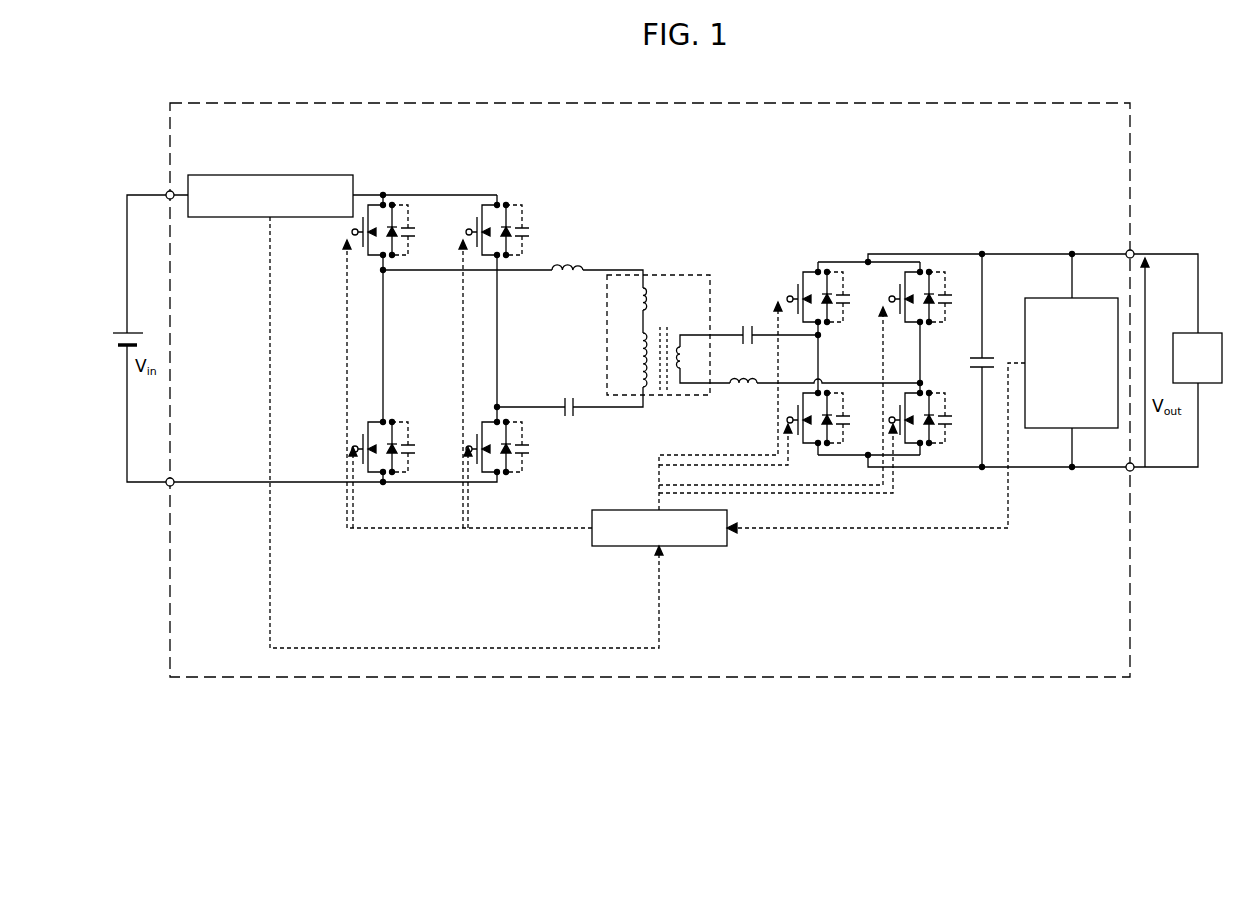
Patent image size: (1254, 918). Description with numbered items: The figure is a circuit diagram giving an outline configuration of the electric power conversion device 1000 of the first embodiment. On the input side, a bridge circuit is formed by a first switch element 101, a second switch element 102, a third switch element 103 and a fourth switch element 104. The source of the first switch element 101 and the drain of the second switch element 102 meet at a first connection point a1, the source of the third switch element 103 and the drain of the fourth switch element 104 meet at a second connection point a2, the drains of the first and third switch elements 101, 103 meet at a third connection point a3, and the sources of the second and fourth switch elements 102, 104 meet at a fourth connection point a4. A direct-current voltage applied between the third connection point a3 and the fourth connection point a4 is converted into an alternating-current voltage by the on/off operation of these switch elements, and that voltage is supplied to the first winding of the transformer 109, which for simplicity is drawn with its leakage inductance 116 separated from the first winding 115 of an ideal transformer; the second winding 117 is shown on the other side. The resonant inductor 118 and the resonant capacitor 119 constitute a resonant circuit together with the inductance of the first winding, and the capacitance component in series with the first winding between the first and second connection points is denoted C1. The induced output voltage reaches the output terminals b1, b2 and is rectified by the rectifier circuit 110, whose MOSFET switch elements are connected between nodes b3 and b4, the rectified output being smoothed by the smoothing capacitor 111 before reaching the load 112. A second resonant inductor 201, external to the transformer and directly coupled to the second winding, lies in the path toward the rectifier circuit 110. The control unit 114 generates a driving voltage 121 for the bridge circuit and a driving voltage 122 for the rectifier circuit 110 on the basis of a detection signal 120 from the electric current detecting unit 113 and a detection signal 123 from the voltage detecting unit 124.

The electric power conversion device 1000 is at (965, 103).
The electric current detecting unit 113 is at (278, 175).
The first switch element 101 is at (374, 192).
The second switch element 102 is at (366, 470).
The third switch element 103 is at (487, 202).
The fourth switch element 104 is at (481, 470).
The first connection point a1 is at (386, 273).
The second connection point a2 is at (500, 405).
The third connection point a3 is at (386, 193).
The fourth connection point a4 is at (386, 485).
The resonant inductor 118 is at (567, 262).
The capacitance component C1 is at (568, 420).
The transformer 109 is at (641, 342).
The first winding 115 is at (638, 356).
The leakage inductance 116 is at (638, 296).
The secondary winding 117 is at (680, 387).
The resonant capacitor 119 is at (745, 324).
The second resonant inductor 201 is at (745, 388).
The rectifier circuit 110 is at (862, 334).
The output terminal b1 is at (821, 337).
The output terminal b2 is at (923, 382).
The node b3 is at (866, 261).
The node b4 is at (866, 458).
The smoothing capacitor 111 is at (986, 356).
The voltage detecting unit 124 is at (1076, 298).
The load 112 is at (1212, 333).
The control unit 114 is at (697, 548).
The detection signal 120 is at (447, 647).
The driving voltage 121 is at (528, 530).
The driving voltage 122 is at (659, 478).
The detection signal 123 is at (873, 530).